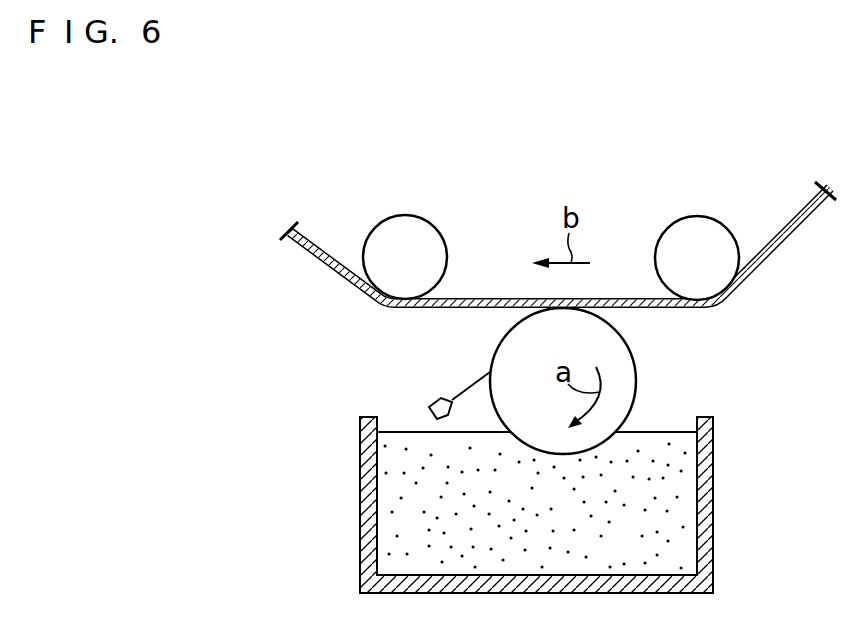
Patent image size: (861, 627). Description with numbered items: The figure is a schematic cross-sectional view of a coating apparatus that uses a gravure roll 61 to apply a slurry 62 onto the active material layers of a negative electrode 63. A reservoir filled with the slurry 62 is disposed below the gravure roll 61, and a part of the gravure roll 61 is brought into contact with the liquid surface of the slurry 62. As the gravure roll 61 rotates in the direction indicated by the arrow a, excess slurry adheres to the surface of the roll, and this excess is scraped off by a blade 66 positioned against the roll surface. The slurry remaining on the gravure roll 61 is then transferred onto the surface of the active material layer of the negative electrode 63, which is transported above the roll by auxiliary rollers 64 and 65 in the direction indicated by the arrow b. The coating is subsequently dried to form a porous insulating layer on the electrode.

The gravure roll 61 is at (622, 378).
The slurry 62 is at (660, 525).
The negative electrode 63 is at (778, 245).
The auxiliary roller 64 is at (404, 230).
The auxiliary roller 65 is at (697, 230).
The blade 66 is at (436, 403).